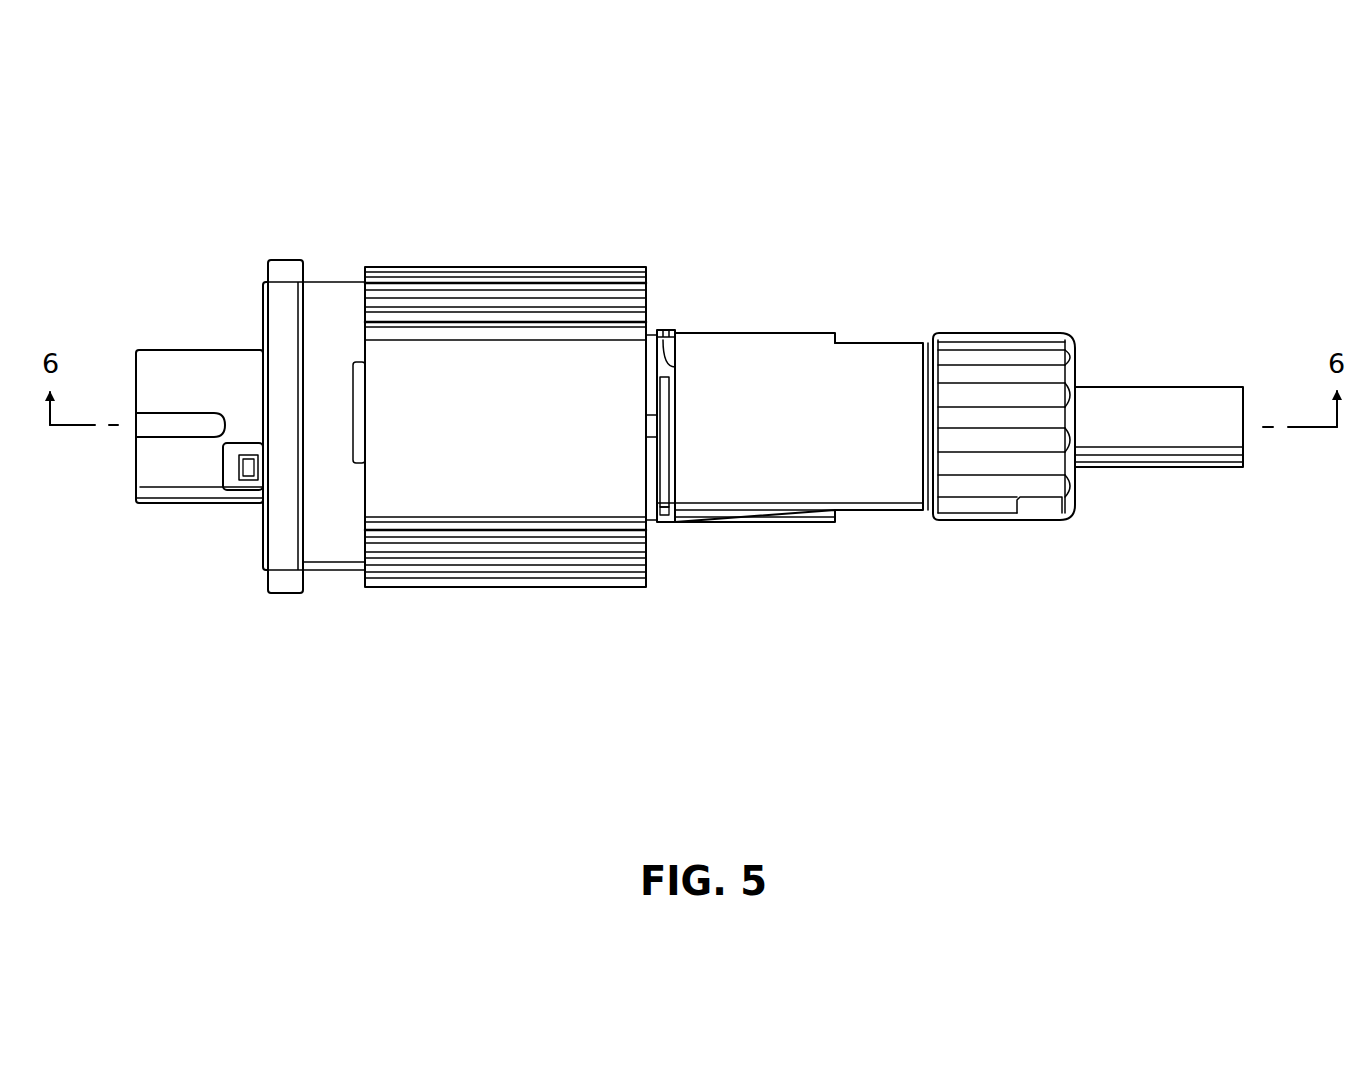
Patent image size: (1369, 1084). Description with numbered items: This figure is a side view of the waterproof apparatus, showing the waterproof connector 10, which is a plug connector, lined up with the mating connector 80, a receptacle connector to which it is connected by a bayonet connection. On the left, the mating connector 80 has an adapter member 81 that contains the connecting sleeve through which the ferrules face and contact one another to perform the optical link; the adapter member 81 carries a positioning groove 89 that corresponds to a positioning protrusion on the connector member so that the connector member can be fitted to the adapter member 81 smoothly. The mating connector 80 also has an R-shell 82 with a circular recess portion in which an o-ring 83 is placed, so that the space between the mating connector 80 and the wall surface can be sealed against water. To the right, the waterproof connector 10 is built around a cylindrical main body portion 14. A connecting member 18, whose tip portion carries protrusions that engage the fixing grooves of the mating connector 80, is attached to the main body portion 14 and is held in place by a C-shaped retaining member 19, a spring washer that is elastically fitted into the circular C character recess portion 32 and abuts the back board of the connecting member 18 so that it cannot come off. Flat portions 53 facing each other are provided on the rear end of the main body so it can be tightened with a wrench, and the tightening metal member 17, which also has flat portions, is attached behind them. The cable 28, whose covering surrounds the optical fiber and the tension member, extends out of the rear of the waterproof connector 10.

The waterproof connector 10 is at (1222, 201).
The main body portion 14 is at (788, 332).
The tightening metal member 17 is at (1010, 332).
The connecting member 18 is at (515, 266).
The retaining member 19 is at (663, 525).
The cable 28 is at (1170, 386).
The circular C character recess portion 32 is at (667, 329).
The flat portions 53 is at (892, 342).
The mating connector 80 is at (112, 296).
The adapter member 81 is at (166, 350).
The R-shell 82 is at (285, 260).
The o-ring 83 is at (262, 556).
The positioning groove 89 is at (190, 412).